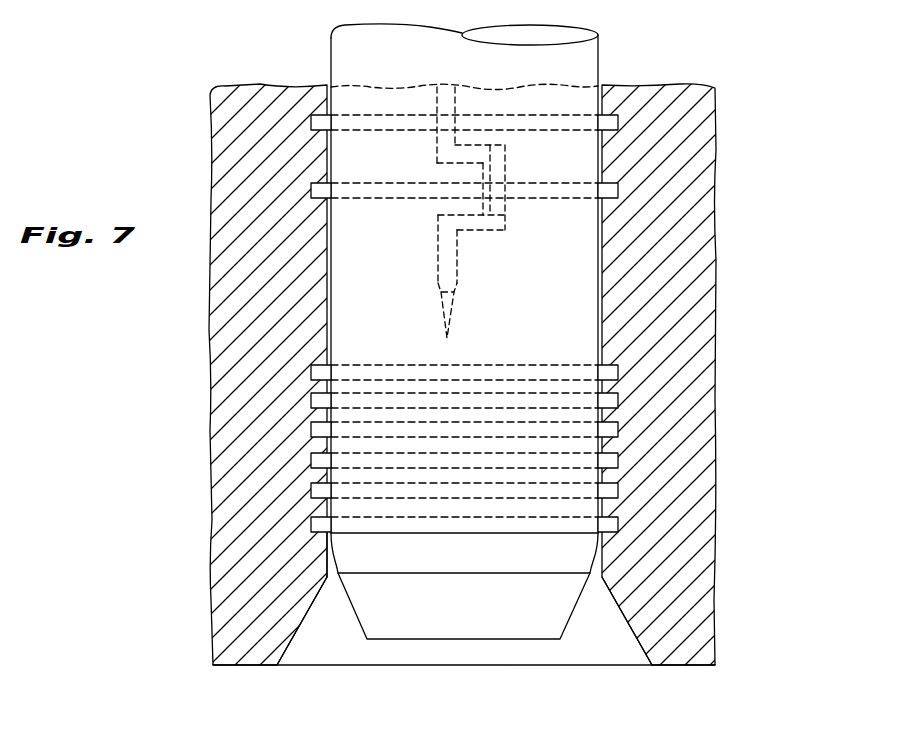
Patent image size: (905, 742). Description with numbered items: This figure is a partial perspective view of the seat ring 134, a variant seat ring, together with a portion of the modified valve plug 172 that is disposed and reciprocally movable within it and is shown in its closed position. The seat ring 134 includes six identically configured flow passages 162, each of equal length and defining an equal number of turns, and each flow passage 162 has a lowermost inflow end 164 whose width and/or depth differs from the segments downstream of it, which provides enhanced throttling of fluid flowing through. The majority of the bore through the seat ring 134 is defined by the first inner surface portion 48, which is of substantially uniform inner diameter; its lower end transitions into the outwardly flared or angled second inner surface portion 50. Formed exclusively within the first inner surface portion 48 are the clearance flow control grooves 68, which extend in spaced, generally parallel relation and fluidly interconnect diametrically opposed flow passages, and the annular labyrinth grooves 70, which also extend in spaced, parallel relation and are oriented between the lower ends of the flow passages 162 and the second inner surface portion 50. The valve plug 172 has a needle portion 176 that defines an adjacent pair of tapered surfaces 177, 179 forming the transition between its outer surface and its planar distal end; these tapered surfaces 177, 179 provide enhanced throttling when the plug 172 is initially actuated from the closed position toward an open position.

The seat ring 134 is at (668, 58).
The clearance flow control grooves 68 is at (367, 120).
The inflow end 164 is at (712, 190).
The first inner surface portion 48 is at (596, 263).
The needle portion 176 is at (568, 338).
The flow passages 162 is at (428, 302).
The annular labyrinth grooves 70 is at (613, 460).
The tapered surface 177 is at (331, 538).
The valve plug 172 is at (560, 557).
The tapered surface 179 is at (347, 605).
The second inner surface portion 50 is at (632, 627).